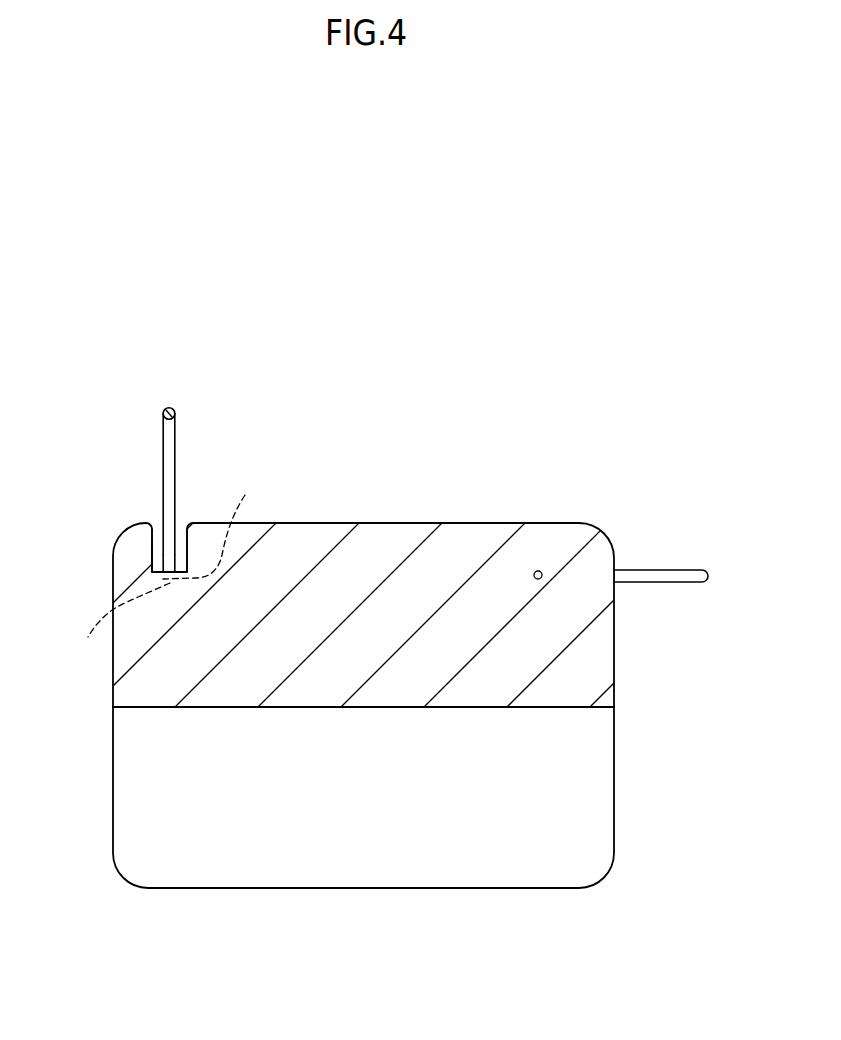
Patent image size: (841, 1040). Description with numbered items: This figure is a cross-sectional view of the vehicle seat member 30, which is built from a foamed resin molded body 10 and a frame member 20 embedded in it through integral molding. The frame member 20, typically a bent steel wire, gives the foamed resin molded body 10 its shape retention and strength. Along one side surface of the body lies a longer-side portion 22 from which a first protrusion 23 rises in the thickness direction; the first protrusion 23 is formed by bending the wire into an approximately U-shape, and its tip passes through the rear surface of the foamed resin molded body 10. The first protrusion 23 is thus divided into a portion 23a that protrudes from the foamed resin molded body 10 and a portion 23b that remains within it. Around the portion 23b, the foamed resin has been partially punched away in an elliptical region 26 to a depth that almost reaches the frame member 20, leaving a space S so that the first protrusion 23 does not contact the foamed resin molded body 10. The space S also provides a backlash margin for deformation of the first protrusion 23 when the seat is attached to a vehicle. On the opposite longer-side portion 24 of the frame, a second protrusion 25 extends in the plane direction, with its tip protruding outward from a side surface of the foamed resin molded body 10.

The foamed resin molded body 10 is at (588, 668).
The frame member 20 is at (117, 626).
The longer-side portion 22 is at (223, 526).
The first protrusion 23 is at (172, 438).
The portion protruding from the foamed resin molded body 23a is at (171, 476).
The portion other than the protruding portion 23b is at (168, 560).
The longer-side portion 24 is at (538, 571).
The second protrusion 25 is at (685, 570).
The region 26 is at (158, 534).
The vehicle seat member 30 is at (584, 492).
The space S is at (157, 550).